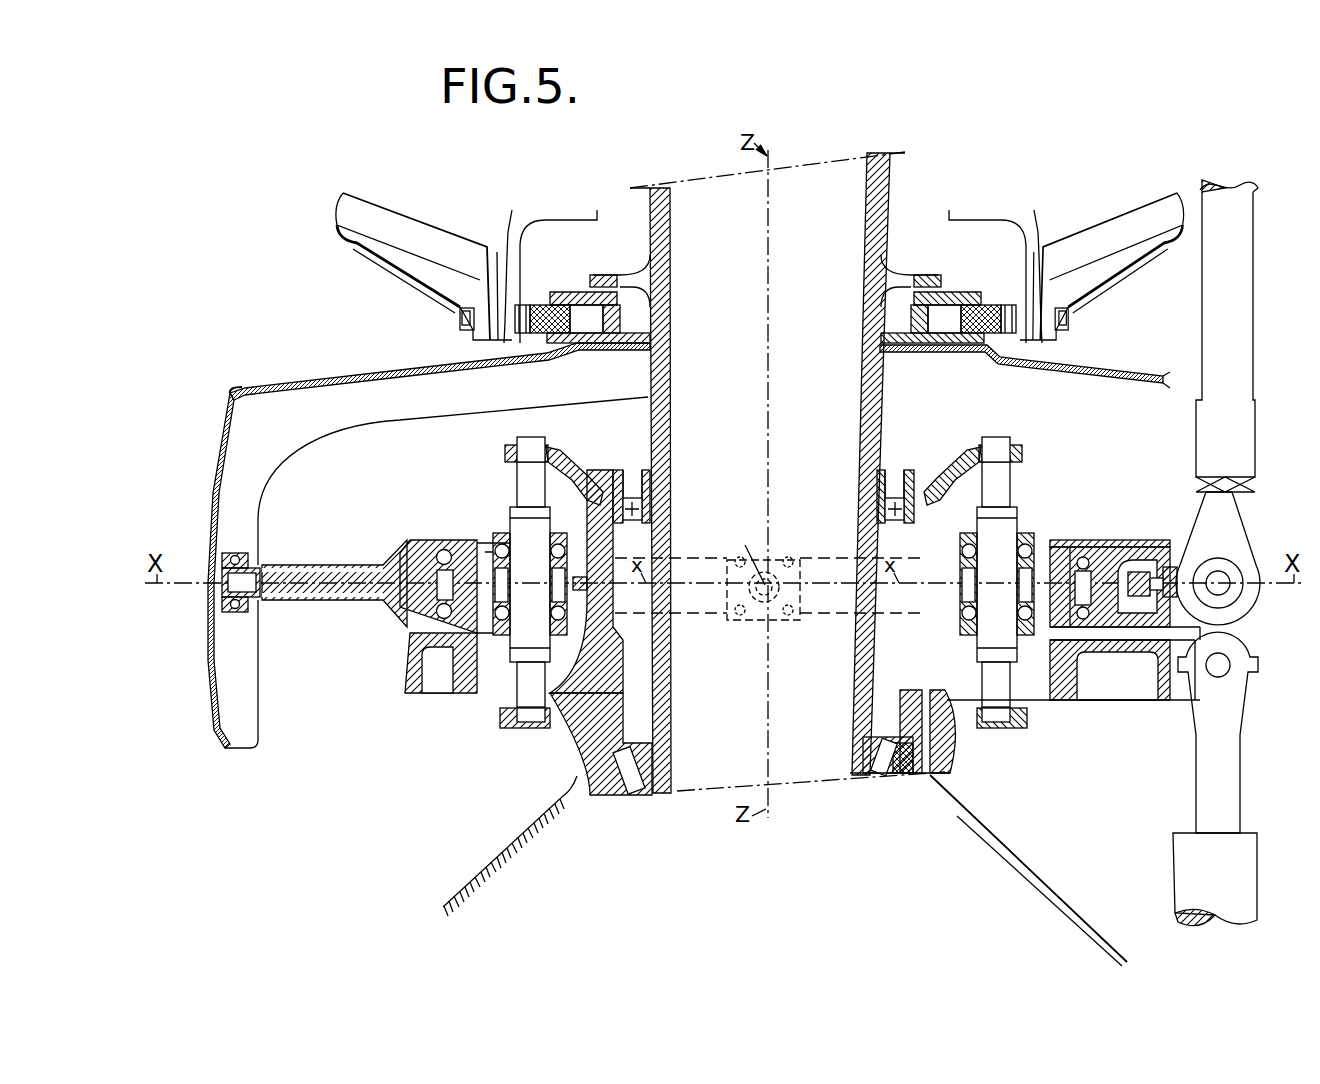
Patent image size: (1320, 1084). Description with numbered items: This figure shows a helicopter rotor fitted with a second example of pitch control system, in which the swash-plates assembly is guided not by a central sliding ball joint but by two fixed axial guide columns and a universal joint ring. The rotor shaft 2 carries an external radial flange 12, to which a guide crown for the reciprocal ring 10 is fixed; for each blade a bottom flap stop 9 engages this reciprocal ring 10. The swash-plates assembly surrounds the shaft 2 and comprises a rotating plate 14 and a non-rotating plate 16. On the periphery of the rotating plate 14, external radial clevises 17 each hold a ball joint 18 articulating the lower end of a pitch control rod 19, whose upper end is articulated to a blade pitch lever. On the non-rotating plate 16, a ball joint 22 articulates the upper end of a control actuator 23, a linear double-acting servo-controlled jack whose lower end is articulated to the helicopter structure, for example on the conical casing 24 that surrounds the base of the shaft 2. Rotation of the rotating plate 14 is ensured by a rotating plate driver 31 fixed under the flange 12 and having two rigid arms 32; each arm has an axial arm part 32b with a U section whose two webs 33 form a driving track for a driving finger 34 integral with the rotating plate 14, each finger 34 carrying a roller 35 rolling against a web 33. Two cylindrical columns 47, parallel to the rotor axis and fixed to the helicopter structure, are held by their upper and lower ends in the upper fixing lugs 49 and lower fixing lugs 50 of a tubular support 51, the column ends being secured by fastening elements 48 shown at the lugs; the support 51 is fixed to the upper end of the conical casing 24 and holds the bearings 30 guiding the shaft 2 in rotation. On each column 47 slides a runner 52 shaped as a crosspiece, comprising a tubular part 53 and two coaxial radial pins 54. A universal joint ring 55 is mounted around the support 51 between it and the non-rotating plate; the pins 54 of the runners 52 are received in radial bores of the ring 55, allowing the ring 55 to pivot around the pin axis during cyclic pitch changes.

The rotor shaft 2 is at (668, 228).
The bottom flap stop 9 is at (1112, 290).
The reciprocal ring 10 is at (992, 305).
The external radial flange 12 is at (602, 275).
The rotating plate 14 is at (1137, 545).
The non-rotating plate 16 is at (1120, 677).
The external radial clevis 17 is at (1168, 563).
The ball joint 18 is at (1243, 603).
The pitch control rod 19 is at (1225, 330).
The ball joint 22 is at (1222, 668).
The control actuator 23 is at (1233, 855).
The conical casing 24 is at (1005, 851).
The bearing 30 is at (642, 507).
The rotating plate driver 31 is at (335, 368).
The rigid arm 32 is at (231, 390).
The axial arm part 32b is at (212, 510).
The web 33 is at (237, 517).
The driving finger 34 is at (265, 613).
The roller 35 is at (240, 553).
The cylindrical column 47 is at (525, 488).
The spindle nut 48 is at (520, 437).
The upper fixing lug 49 is at (580, 465).
The lower fixing lug 50 is at (567, 725).
The tubular support 51 is at (600, 640).
The runner 52 is at (500, 513).
The tubular part 53 is at (1017, 527).
The pin 54 is at (1020, 587).
The universal joint ring 55 is at (826, 572).